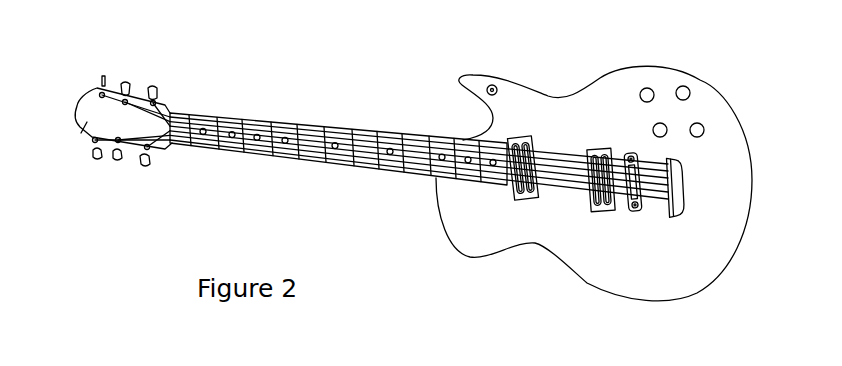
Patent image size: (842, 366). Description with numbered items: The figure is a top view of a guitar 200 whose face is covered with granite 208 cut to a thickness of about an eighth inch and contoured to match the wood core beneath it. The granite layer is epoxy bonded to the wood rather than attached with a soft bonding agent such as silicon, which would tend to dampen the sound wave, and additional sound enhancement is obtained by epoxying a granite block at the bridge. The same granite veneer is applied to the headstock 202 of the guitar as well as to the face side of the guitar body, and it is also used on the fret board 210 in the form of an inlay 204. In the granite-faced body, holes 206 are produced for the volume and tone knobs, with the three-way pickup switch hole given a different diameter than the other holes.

The electric guitar 200 is at (441, 300).
The headstock 202 is at (88, 123).
The inlay 204 is at (230, 137).
The holes 206 is at (685, 92).
The granite 208 is at (594, 173).
The fret board 210 is at (338, 180).